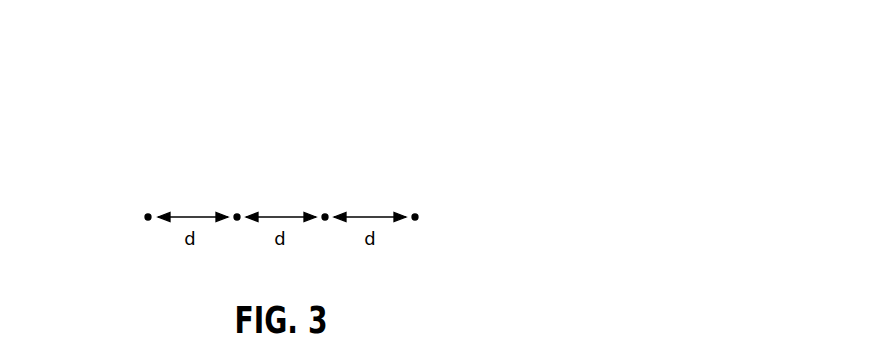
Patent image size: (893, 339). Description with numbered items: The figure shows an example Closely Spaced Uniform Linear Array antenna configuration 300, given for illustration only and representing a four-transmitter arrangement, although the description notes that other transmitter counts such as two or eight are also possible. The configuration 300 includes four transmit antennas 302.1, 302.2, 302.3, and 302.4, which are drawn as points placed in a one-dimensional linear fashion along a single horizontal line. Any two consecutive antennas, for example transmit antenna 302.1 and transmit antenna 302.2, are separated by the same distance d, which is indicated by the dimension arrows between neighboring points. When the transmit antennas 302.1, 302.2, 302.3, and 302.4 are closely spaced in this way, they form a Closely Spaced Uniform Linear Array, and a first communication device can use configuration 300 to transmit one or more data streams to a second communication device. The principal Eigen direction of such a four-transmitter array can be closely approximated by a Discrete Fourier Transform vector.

The Closely Spaced Uniform Linear Array antenna configuration 300 is at (672, 33).
The transmit antenna 302.1 is at (148, 214).
The transmit antenna 302.2 is at (237, 214).
The transmit antenna 302.3 is at (325, 214).
The transmit antenna 302.4 is at (415, 214).